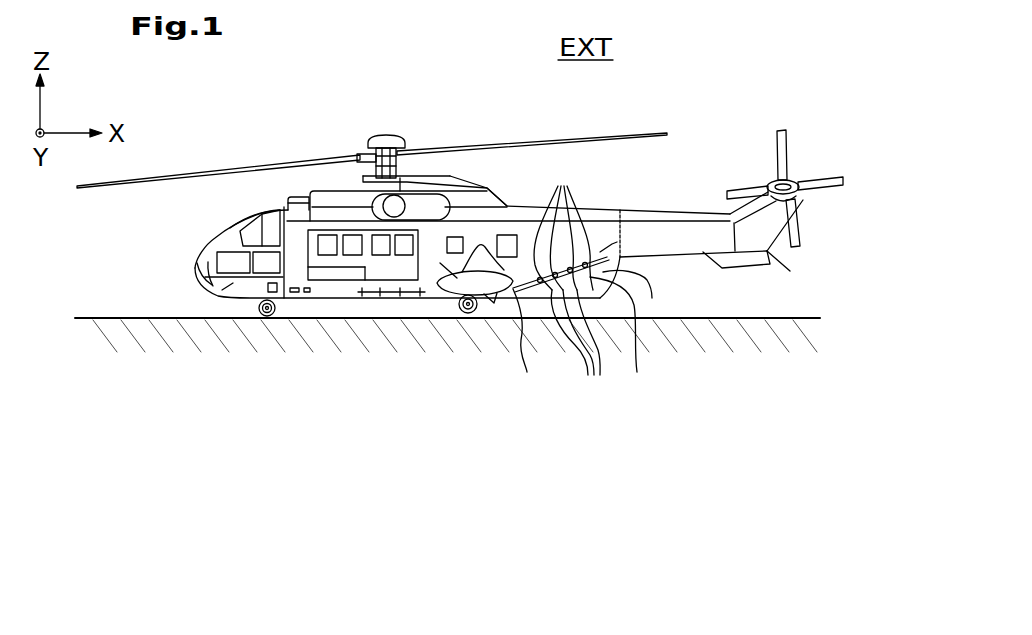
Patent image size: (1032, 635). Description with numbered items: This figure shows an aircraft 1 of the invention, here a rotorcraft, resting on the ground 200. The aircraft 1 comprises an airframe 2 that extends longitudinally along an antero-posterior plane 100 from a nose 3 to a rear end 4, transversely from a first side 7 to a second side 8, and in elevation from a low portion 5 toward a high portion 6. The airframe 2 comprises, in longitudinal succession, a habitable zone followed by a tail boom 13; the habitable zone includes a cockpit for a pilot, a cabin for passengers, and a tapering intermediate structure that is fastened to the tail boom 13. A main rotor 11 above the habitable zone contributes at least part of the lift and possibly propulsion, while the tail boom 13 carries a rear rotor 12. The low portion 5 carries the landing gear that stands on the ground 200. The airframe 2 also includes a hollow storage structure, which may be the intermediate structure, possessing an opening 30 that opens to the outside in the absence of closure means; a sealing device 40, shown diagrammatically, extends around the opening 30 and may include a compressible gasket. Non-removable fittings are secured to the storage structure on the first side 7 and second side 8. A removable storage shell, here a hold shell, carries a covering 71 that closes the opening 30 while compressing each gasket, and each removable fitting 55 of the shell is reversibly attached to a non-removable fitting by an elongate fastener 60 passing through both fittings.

The aircraft 1 is at (828, 290).
The airframe 2 is at (305, 298).
The nose 3 is at (202, 263).
The rear end 4 is at (830, 253).
The low portion 5 is at (355, 314).
The high portion 6 is at (500, 190).
The first side 7 is at (447, 296).
The second side 8 is at (224, 219).
The main rotor 11 is at (328, 142).
The rear rotor 12 is at (868, 178).
The tail boom 13 is at (722, 242).
The opening 30 is at (598, 250).
The sealing device 40 is at (617, 242).
The removable fitting 55 is at (579, 350).
The elongate fastener 60 is at (521, 350).
The covering 71 is at (652, 296).
The antero-posterior plane 100 is at (843, 88).
The ground 200 is at (83, 317).